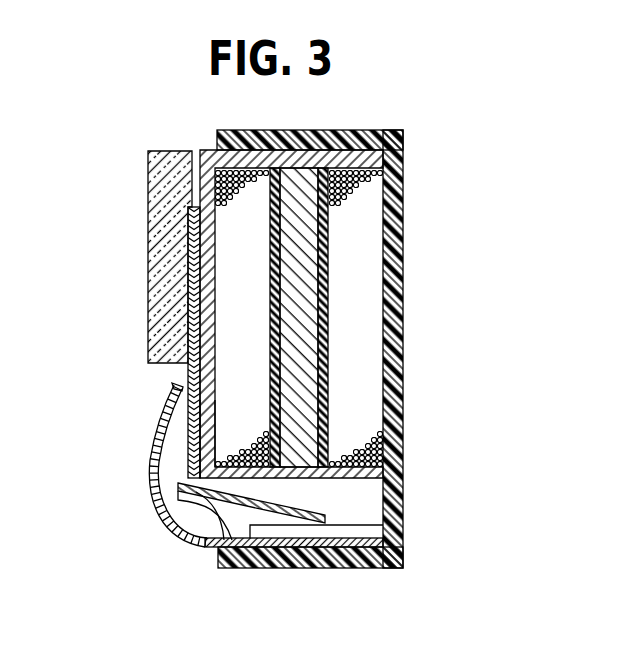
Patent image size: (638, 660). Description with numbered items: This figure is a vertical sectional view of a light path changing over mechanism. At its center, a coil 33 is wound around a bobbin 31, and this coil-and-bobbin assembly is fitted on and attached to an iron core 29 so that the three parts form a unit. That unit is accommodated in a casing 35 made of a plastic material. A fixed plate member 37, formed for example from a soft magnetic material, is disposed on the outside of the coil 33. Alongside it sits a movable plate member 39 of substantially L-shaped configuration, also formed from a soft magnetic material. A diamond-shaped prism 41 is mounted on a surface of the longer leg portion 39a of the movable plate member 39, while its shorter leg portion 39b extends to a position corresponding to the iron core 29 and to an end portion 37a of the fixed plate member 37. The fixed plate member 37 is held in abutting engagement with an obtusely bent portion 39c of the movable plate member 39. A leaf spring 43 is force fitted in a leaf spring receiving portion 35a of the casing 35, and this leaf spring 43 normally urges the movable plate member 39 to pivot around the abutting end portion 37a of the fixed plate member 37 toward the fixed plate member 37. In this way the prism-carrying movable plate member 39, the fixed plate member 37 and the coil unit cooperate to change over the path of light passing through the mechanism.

The iron core 29 is at (330, 251).
The bobbin 31 is at (330, 300).
The coil 33 is at (372, 442).
The casing 35 is at (396, 205).
The leaf spring receiving portion 35a is at (378, 543).
The fixed plate member 37 is at (200, 150).
The end portion of fixed plate member 37a is at (190, 440).
The movable plate member 39 is at (171, 415).
The longer leg portion 39a is at (188, 266).
The shorter leg portion 39b is at (297, 515).
The obtusely bent portion 39c is at (190, 474).
The diamond-shaped prism 41 is at (155, 207).
The leaf spring 43 is at (151, 499).